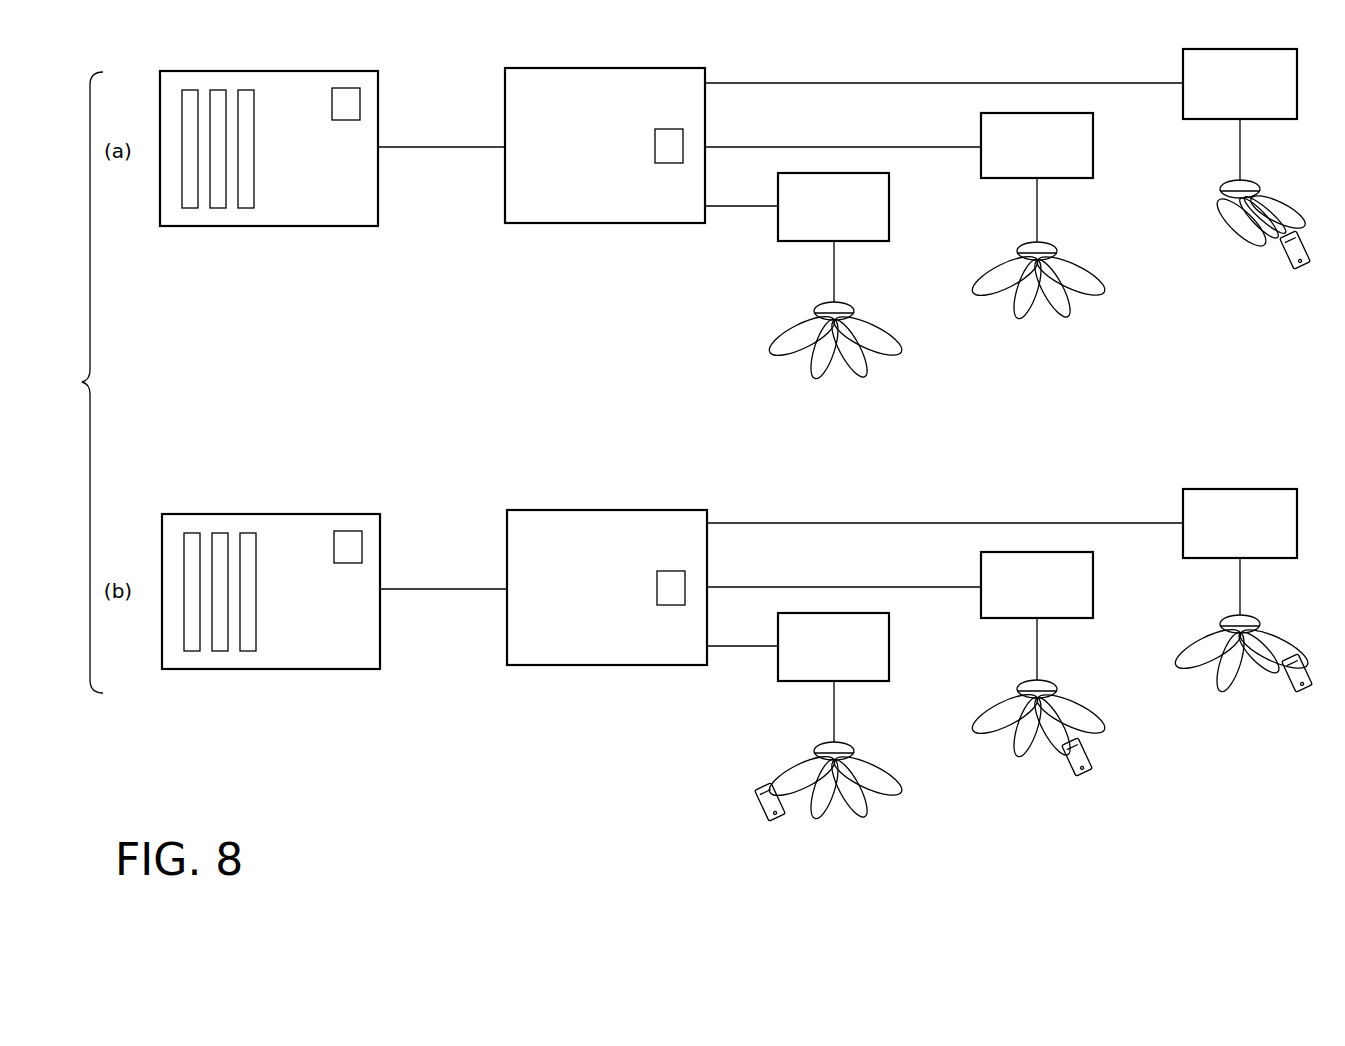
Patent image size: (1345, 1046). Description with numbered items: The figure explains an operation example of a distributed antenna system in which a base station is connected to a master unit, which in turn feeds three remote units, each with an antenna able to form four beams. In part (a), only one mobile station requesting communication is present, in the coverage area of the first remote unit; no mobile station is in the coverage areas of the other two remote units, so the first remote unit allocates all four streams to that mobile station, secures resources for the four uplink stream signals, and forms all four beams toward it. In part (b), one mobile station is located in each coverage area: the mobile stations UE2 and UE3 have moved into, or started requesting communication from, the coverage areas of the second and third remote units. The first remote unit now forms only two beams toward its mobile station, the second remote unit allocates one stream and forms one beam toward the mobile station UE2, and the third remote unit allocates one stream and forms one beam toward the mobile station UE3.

The mobile station UE2 is at (1086, 785).
The mobile station UE3 is at (777, 829).